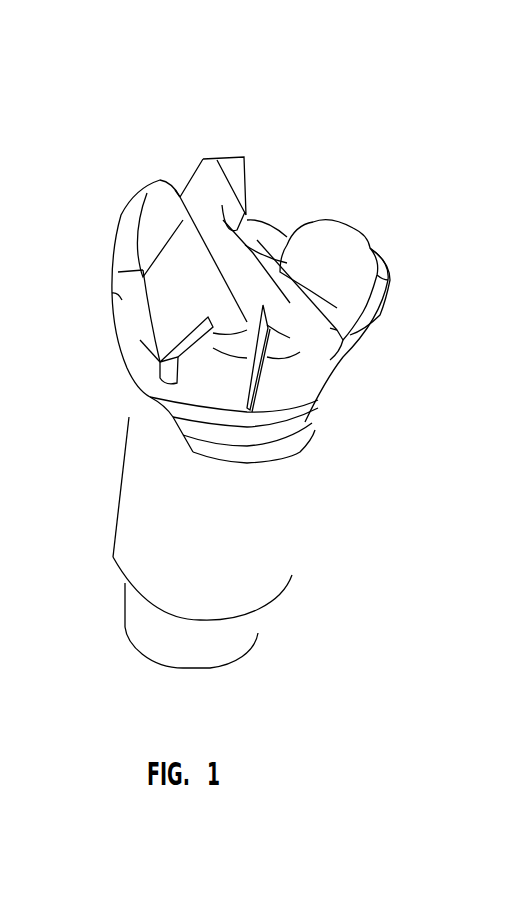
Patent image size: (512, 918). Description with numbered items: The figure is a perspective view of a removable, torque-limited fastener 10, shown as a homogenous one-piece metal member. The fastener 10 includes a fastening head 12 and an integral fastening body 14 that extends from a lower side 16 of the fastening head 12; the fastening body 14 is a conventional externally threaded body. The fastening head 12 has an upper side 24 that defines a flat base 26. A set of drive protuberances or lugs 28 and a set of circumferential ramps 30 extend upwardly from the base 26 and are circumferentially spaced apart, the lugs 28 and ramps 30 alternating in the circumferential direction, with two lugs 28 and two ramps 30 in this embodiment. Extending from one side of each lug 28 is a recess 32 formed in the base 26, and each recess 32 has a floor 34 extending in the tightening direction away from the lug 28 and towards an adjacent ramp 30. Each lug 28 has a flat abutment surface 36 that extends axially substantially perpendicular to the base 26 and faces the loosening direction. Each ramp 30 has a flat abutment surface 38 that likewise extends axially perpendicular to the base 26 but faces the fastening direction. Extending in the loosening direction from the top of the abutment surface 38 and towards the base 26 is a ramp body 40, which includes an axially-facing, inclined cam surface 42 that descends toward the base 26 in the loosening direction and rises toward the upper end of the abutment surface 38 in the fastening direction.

The fastener 10 is at (416, 148).
The fastening head 12 is at (355, 367).
The fastening body 14 is at (285, 530).
The lower side 16 is at (125, 370).
The upper side 24 is at (192, 203).
The base 26 is at (323, 367).
The lug 28 is at (228, 160).
The ramp 30 is at (118, 263).
The recess 32 is at (263, 233).
The floor 34 is at (283, 233).
The abutment surface 36 is at (213, 187).
The abutment surface 38 is at (175, 190).
The ramp body 40 is at (328, 255).
The cam surface 42 is at (128, 227).